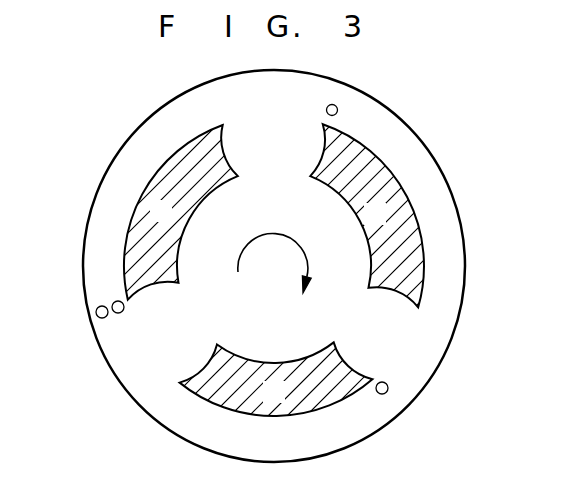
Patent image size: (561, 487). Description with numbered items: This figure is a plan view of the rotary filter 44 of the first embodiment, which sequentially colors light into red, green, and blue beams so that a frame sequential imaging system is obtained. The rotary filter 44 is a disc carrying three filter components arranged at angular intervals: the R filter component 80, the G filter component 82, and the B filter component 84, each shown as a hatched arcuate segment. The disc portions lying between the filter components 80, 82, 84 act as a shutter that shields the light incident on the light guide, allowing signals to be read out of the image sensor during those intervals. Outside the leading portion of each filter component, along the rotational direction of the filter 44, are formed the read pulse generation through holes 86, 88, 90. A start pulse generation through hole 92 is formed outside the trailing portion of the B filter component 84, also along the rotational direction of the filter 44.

The rotary filter 44 is at (436, 196).
The R filter component 80 is at (332, 404).
The G filter component 82 is at (355, 154).
The B filter component 84 is at (217, 133).
The read pulse generation through hole 86 is at (381, 382).
The read pulse generation through hole 88 is at (326, 113).
The read pulse generation through hole 90 is at (124, 310).
The start pulse generation through hole 92 is at (96, 309).